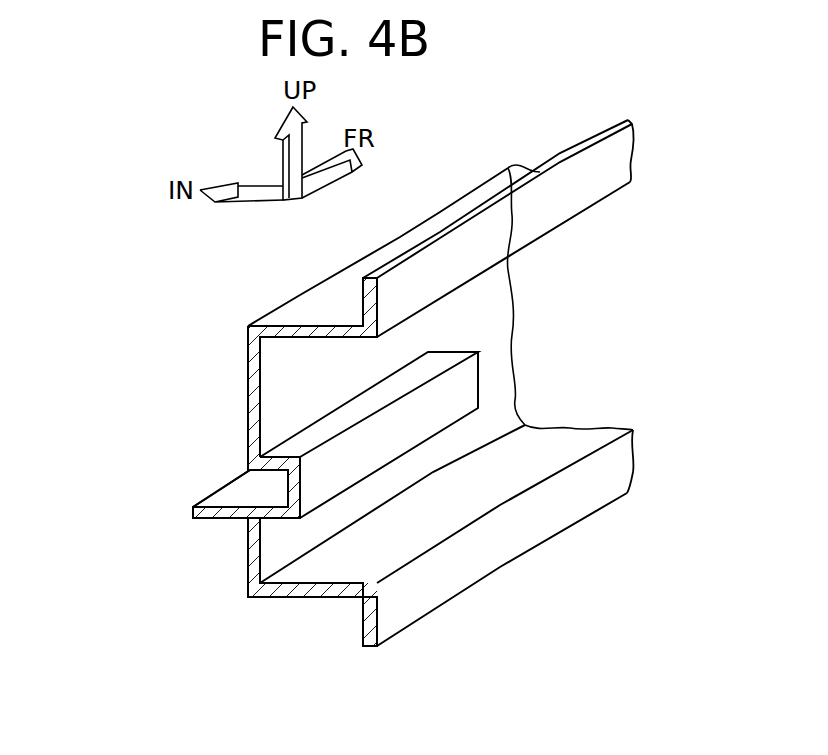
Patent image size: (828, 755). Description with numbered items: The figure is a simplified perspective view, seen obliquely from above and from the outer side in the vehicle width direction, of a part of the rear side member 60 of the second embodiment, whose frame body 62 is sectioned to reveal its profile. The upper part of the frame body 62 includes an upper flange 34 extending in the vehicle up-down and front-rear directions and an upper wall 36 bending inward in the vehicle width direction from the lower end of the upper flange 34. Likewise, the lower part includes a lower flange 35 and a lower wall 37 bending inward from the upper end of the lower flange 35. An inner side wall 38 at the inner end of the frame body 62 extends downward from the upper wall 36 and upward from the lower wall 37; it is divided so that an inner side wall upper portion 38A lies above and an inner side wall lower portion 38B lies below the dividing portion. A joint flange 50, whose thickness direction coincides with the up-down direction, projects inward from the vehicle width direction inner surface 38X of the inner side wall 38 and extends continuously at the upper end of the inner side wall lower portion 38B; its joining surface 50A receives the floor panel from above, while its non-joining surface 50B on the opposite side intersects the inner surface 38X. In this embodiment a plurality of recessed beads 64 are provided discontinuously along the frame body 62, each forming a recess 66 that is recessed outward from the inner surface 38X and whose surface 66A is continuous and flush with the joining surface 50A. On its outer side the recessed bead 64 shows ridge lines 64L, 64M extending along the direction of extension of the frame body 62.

The upper flange 34 is at (598, 178).
The lower flange 35 is at (598, 492).
The upper wall 36 is at (478, 192).
The lower wall 37 is at (573, 438).
The inner side wall 38 is at (243, 357).
The inner side wall upper portion 38A is at (288, 412).
The inner side wall lower portion 38B is at (283, 550).
The vehicle width direction inner surface 38X is at (245, 575).
The joint flange 50 is at (222, 508).
The joining surface 50A is at (273, 496).
The non-joining surface 50B is at (245, 528).
The rear side member 60 is at (152, 249).
The frame body 62 is at (264, 275).
The recessed bead 64 is at (292, 490).
The ridge line 64L is at (368, 410).
The ridge line 64M is at (412, 452).
The recess 66 is at (263, 478).
The surface 66A is at (312, 497).